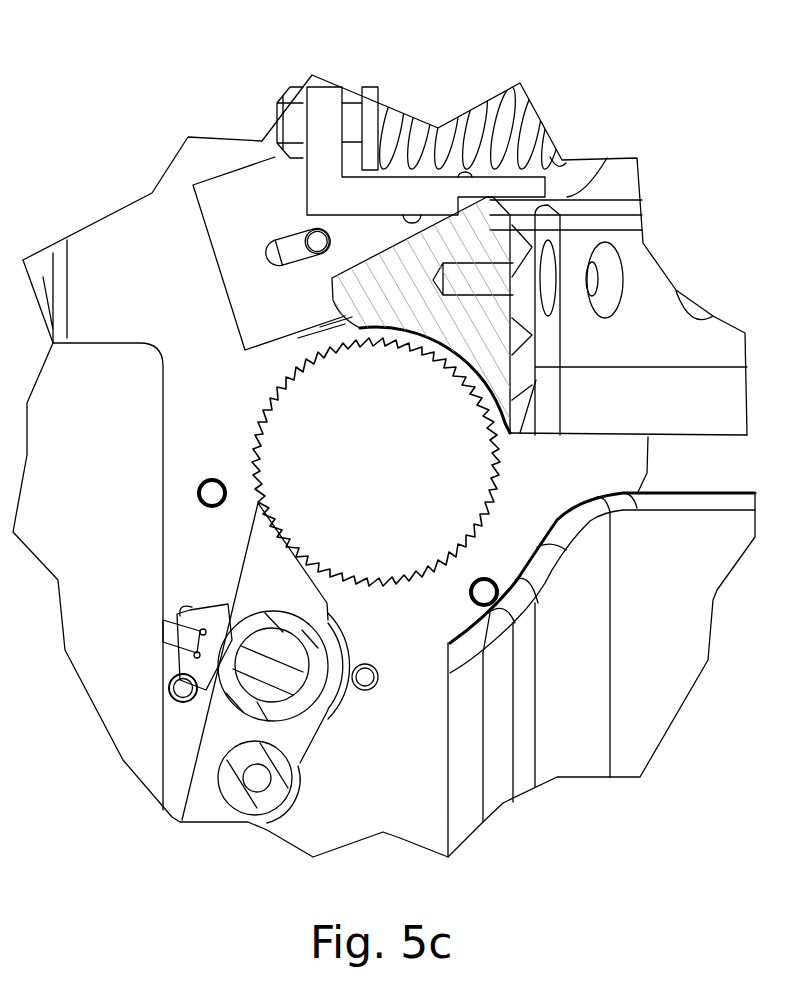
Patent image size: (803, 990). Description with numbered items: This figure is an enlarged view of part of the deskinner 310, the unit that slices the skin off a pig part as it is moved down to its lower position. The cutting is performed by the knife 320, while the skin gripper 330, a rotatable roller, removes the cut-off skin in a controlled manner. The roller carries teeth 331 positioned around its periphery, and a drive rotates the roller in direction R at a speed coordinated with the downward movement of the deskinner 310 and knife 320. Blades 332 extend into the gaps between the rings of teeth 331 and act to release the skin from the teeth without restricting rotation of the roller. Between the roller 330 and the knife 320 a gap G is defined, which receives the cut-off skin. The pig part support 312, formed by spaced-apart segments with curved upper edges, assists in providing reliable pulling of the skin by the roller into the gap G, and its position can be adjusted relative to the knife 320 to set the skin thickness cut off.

The deskinner 310 is at (170, 140).
The pig part support 312 is at (598, 669).
The knife 320 is at (523, 437).
The skin gripper 330 is at (302, 448).
The teeth 331 is at (393, 582).
The blades 332 is at (257, 583).
The gap G is at (510, 437).
The direction of rotation R is at (459, 436).